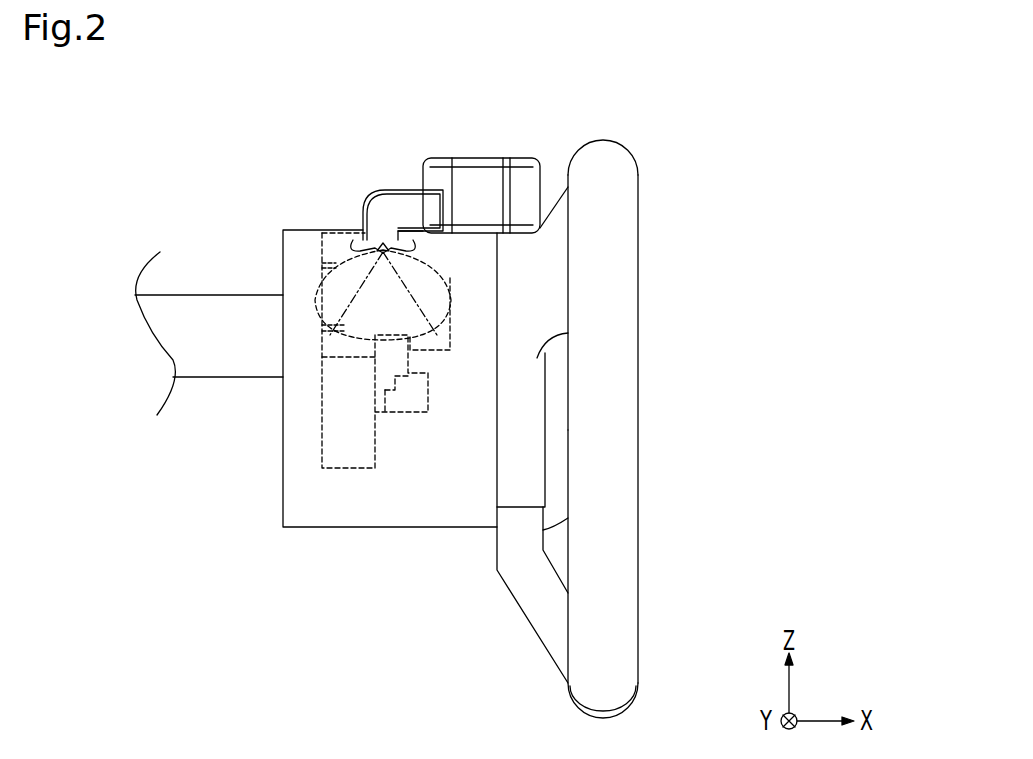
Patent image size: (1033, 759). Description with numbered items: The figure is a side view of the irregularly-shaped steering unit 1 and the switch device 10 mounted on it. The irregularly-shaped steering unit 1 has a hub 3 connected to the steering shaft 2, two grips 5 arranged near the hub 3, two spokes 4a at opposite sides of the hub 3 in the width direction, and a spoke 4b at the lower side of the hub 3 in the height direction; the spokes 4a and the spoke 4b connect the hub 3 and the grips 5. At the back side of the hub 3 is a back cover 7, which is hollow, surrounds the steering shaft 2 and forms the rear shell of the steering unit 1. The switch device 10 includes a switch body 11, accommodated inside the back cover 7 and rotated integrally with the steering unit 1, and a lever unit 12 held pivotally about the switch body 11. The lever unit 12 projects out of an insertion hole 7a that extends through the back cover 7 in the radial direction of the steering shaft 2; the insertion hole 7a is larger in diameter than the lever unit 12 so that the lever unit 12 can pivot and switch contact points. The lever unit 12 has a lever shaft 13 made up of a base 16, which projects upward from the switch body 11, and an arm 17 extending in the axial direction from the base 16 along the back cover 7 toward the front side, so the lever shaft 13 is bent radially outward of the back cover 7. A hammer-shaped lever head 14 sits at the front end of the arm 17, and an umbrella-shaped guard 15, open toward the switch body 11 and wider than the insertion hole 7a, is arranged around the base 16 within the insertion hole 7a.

The irregularly-shaped steering unit 1 is at (603, 140).
The steering shaft 2 is at (206, 295).
The hub 3 is at (530, 427).
The spokes 4a is at (555, 296).
The spoke 4b is at (555, 628).
The grips 5 is at (633, 418).
The back cover 7 is at (405, 522).
The insertion hole 7a is at (380, 253).
The switch device 10 is at (309, 151).
The switch body 11 is at (377, 437).
The lever unit 12 is at (505, 112).
The lever shaft 13 is at (417, 188).
The lever head 14 is at (472, 157).
The guard 15 is at (432, 265).
The base 16 is at (372, 228).
The arm 17 is at (392, 206).